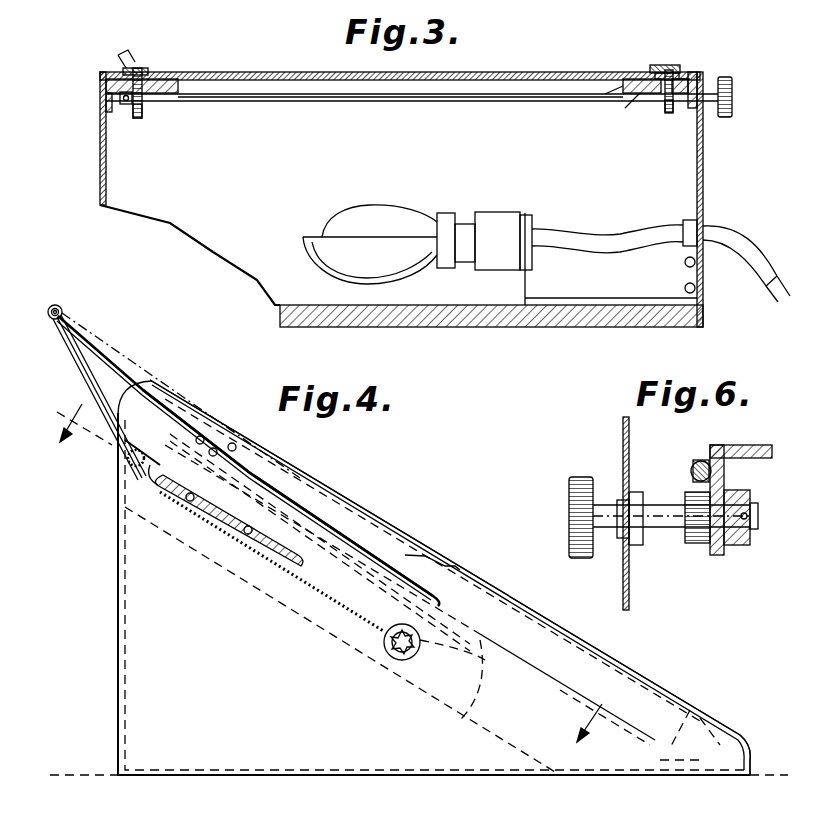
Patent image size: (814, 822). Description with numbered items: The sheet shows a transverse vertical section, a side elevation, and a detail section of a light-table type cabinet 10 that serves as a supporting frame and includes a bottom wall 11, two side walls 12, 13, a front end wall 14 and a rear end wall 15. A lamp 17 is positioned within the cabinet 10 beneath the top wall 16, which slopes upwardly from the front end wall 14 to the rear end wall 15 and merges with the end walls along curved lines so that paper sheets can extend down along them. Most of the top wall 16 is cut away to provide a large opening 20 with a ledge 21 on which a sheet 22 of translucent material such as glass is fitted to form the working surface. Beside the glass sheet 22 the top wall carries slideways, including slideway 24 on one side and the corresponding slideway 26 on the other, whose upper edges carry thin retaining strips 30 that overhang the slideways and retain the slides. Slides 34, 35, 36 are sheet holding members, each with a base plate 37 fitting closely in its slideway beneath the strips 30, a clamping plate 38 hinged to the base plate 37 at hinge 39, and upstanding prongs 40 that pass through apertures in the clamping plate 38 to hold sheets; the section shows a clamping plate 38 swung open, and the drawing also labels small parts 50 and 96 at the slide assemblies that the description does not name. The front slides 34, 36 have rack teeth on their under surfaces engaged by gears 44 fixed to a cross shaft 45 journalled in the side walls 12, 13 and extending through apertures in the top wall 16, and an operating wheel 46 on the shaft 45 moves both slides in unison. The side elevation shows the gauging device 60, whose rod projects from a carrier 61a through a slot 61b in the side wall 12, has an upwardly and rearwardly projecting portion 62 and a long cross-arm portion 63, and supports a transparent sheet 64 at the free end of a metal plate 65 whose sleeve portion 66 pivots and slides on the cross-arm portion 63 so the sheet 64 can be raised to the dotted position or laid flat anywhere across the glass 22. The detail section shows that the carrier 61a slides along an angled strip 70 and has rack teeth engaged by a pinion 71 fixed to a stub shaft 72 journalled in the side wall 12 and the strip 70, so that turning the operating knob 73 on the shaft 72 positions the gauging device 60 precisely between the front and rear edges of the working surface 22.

In FIG. 3, the cabinet 10 is at (160, 224).
In FIG. 4, the cabinet 10 is at (155, 677).
In FIG. 3, the bottom wall 11 is at (445, 327).
In FIG. 3, the side wall 12 is at (98, 142).
In FIG. 4, the side wall 12 is at (320, 740).
In FIG. 6, the side wall 12 is at (629, 590).
In FIG. 3, the side wall 13 is at (703, 168).
In FIG. 4, the front end wall 14 is at (752, 752).
In FIG. 4, the rear end wall 15 is at (117, 570).
In FIG. 4, the top wall 16 is at (630, 669).
In FIG. 3, the lamp 17 is at (395, 205).
In FIG. 3, the opening 20 is at (632, 79).
In FIG. 3, the ledge 21 is at (605, 94).
In FIG. 3, the sheet of translucent material 22 is at (520, 72).
In FIG. 3, the slideway 24 is at (700, 72).
In FIG. 3, the slideway 26 is at (108, 95).
In FIG. 3, the retaining strip 30 is at (655, 67).
In FIG. 3, the slide 34 is at (625, 108).
In FIG. 4, the slide 35 is at (318, 480).
In FIG. 3, the slide 36 is at (126, 104).
In FIG. 4, the slide 36 is at (541, 615).
In FIG. 3, the base plate 37 is at (142, 90).
In FIG. 3, the clamping plate 38 is at (682, 70).
In FIG. 3, the hinge 39 is at (122, 70).
In FIG. 3, the prong 40 is at (660, 70).
In FIG. 3, the gear 44 is at (142, 112).
In FIG. 3, the cross shaft 45 is at (385, 101).
In FIG. 3, the operating wheel 46 is at (732, 97).
In FIG. 3, the screws 50 is at (180, 58).
In FIG. 4, the gauging device 60 is at (412, 550).
In FIG. 4, the carrier 61a is at (178, 495).
In FIG. 6, the carrier 61a is at (698, 460).
In FIG. 4, the slot 61b is at (262, 535).
In FIG. 4, the upwardly and rearwardly projecting portion 62 is at (70, 368).
In FIG. 4, the cross-arm portion 63 is at (62, 312).
In FIG. 4, the sheet of transparent material 64 is at (262, 466).
In FIG. 4, the metal plate 65 is at (190, 373).
In FIG. 4, the sleeve portion 66 is at (62, 305).
In FIG. 4, the angled strip 70 is at (452, 693).
In FIG. 6, the angled strip 70 is at (735, 445).
In FIG. 4, the pinion 71 is at (410, 660).
In FIG. 6, the pinion 71 is at (697, 543).
In FIG. 4, the stub shaft 72 is at (395, 660).
In FIG. 6, the stub shaft 72 is at (662, 500).
In FIG. 4, the operating knob 73 is at (384, 640).
In FIG. 6, the operating knob 73 is at (569, 480).
In FIG. 3, the spacer 96 is at (694, 72).